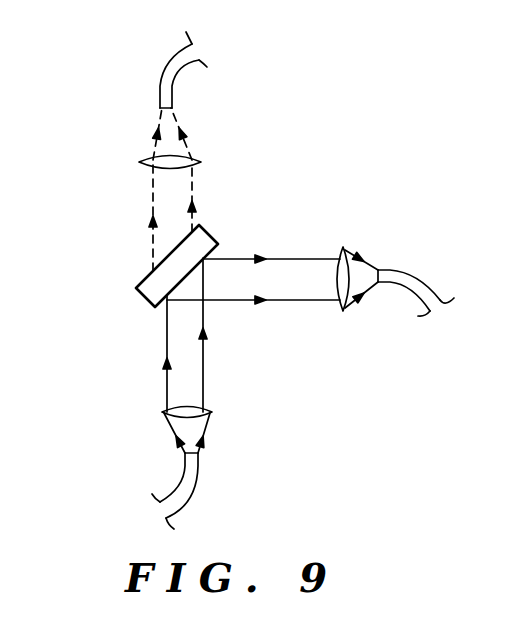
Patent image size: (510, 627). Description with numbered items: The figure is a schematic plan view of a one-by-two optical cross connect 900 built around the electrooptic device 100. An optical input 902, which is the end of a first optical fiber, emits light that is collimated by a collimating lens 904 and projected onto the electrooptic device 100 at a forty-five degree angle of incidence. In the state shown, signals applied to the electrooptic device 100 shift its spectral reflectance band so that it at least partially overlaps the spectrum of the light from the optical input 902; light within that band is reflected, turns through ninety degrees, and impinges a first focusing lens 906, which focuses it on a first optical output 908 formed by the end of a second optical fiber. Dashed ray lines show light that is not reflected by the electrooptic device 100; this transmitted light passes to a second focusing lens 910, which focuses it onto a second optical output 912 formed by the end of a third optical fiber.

The one-by-two optical cross connect 900 is at (370, 97).
The electrooptic device 100 is at (212, 232).
The optical input 902 is at (193, 490).
The collimating lens 904 is at (211, 411).
The first focusing lens 906 is at (346, 308).
The first optical output 908 is at (414, 275).
The second focusing lens 910 is at (141, 160).
The second optical output 912 is at (164, 75).